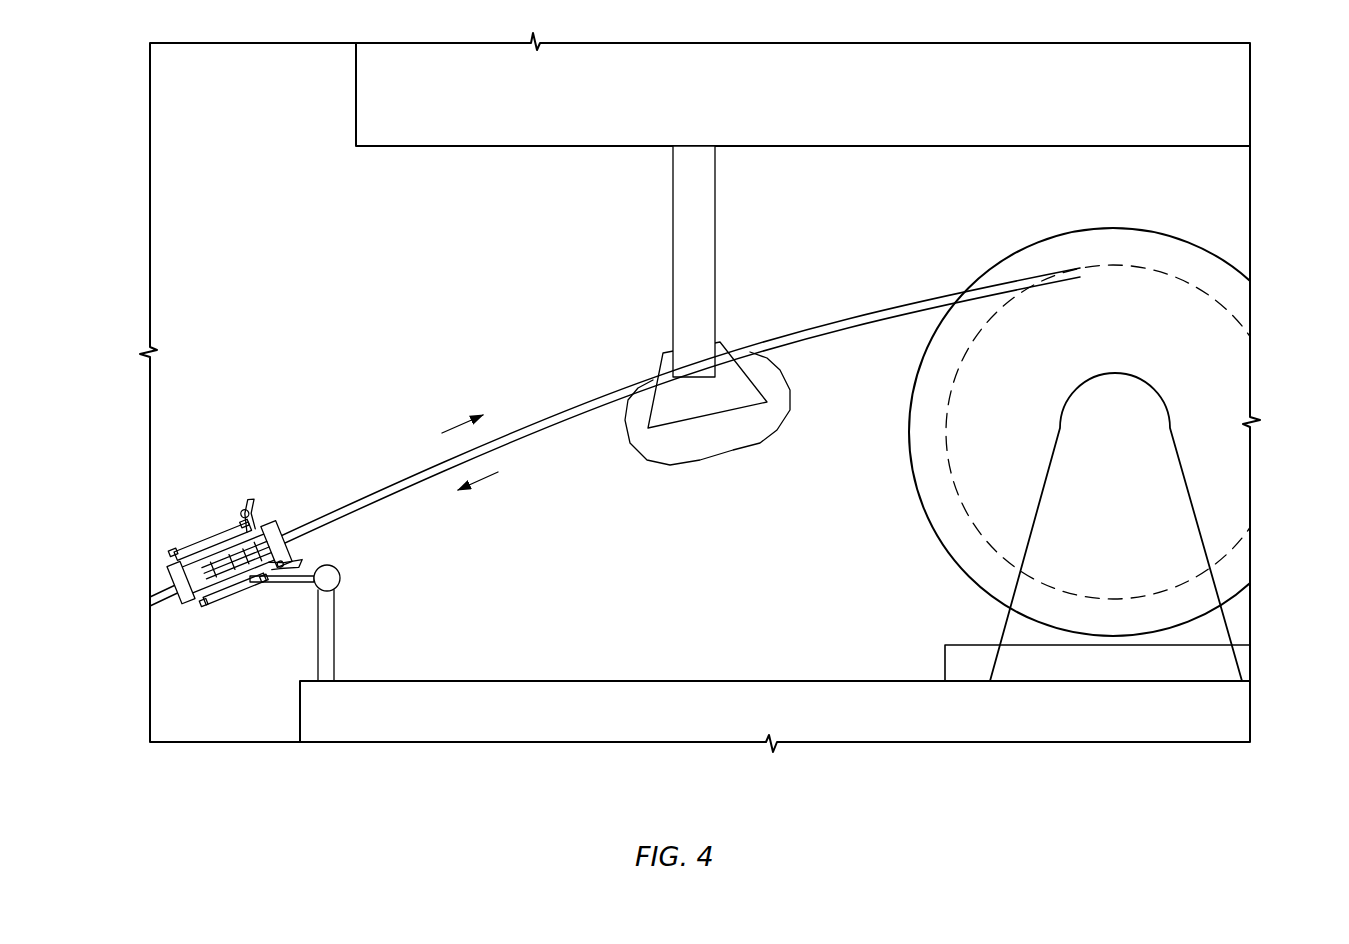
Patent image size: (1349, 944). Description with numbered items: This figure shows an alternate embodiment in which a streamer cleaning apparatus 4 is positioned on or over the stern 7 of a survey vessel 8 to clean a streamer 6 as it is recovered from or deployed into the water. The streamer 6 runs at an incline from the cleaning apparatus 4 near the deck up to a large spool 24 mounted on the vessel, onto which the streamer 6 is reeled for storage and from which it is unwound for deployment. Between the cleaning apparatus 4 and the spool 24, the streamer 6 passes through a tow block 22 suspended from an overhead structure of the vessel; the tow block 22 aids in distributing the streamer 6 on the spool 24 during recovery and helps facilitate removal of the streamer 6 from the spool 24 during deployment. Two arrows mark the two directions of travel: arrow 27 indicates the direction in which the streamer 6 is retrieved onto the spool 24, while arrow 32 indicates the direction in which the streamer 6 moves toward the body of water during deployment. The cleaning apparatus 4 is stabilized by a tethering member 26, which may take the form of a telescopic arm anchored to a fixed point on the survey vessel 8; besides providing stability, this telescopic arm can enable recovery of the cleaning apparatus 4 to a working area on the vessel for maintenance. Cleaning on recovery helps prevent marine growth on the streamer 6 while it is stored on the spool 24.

The streamer cleaning apparatus 4 is at (195, 527).
The streamer 6 is at (340, 512).
The stern 7 is at (632, 681).
The survey vessel 8 is at (900, 720).
The tow block 22 is at (663, 352).
The spool 24 is at (1225, 258).
The tethering member 26 is at (283, 582).
The arrow 27 is at (445, 432).
The arrow 32 is at (488, 475).